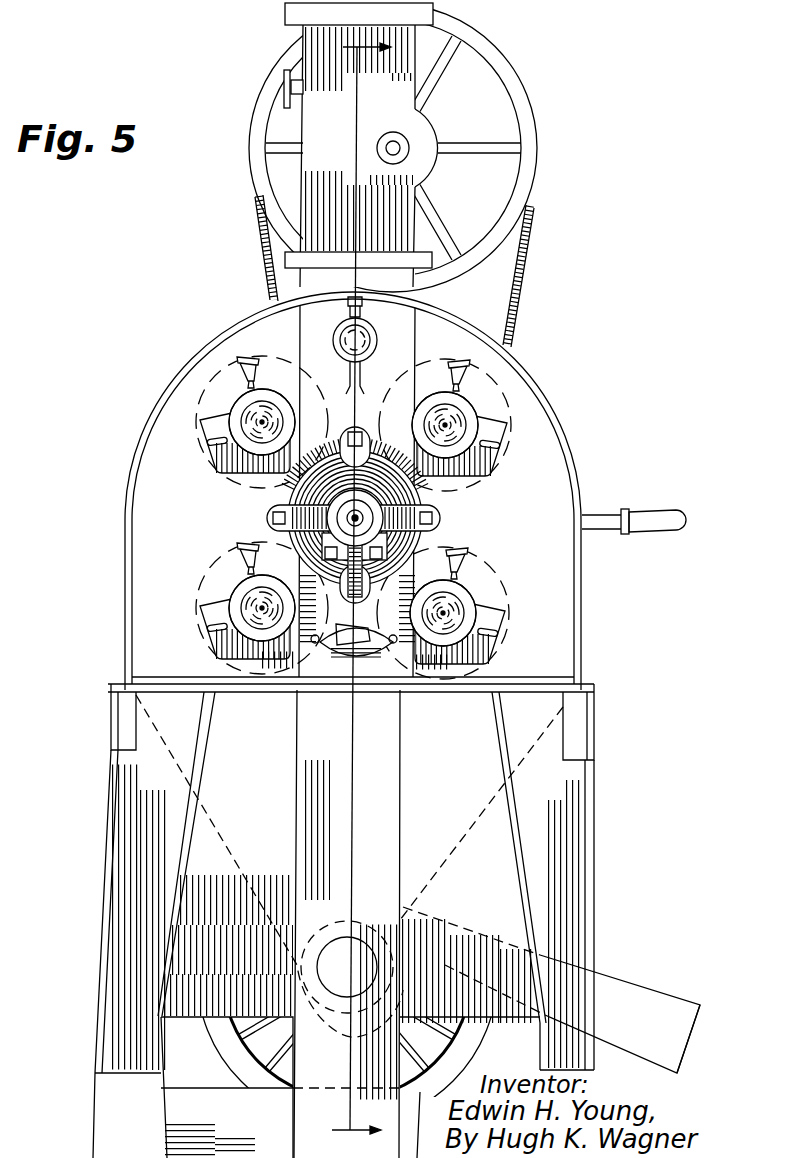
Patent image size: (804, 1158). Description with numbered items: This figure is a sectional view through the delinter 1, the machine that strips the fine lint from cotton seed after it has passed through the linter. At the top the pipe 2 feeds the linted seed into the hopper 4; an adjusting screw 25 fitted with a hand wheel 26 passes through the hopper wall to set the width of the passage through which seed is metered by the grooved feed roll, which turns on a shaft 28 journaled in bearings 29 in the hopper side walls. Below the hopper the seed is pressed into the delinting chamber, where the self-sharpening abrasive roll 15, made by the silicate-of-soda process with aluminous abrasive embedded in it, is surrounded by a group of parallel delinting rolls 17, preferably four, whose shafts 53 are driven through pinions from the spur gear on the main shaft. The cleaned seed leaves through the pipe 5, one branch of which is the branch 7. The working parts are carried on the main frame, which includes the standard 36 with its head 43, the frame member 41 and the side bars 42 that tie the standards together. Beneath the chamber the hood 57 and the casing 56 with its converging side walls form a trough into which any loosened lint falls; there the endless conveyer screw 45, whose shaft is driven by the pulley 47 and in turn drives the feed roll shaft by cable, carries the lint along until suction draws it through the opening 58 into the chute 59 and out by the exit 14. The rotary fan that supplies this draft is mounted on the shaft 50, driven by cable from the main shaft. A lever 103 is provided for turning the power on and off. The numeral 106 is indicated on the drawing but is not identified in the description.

The delinter 1 is at (230, 338).
The pipe 2 is at (513, 25).
The hopper 4 is at (369, 156).
The pipe 5 is at (343, 1139).
The branch 7 is at (347, 924).
The exit 14 is at (673, 1042).
The abrasive roll 15 is at (388, 515).
The delinting rolls 17 is at (500, 393).
The adjusting screw 25 is at (284, 92).
The hand wheel 26 is at (291, 80).
The shaft 28 is at (385, 150).
The bearings 29 is at (406, 142).
The standard 36 is at (596, 822).
The frame member 41 is at (350, 1087).
The side bars 42 is at (111, 722).
The head 43 is at (398, 648).
The endless conveyer screw 45 is at (365, 935).
The pulley 47 is at (477, 1048).
The shaft 50 is at (370, 337).
The shafts 53 is at (258, 432).
The casing 56 is at (170, 750).
The hood 57 is at (552, 398).
The opening 58 is at (388, 964).
The chute 59 is at (551, 990).
The lever 103 is at (680, 525).
The spindle 106 is at (343, 662).